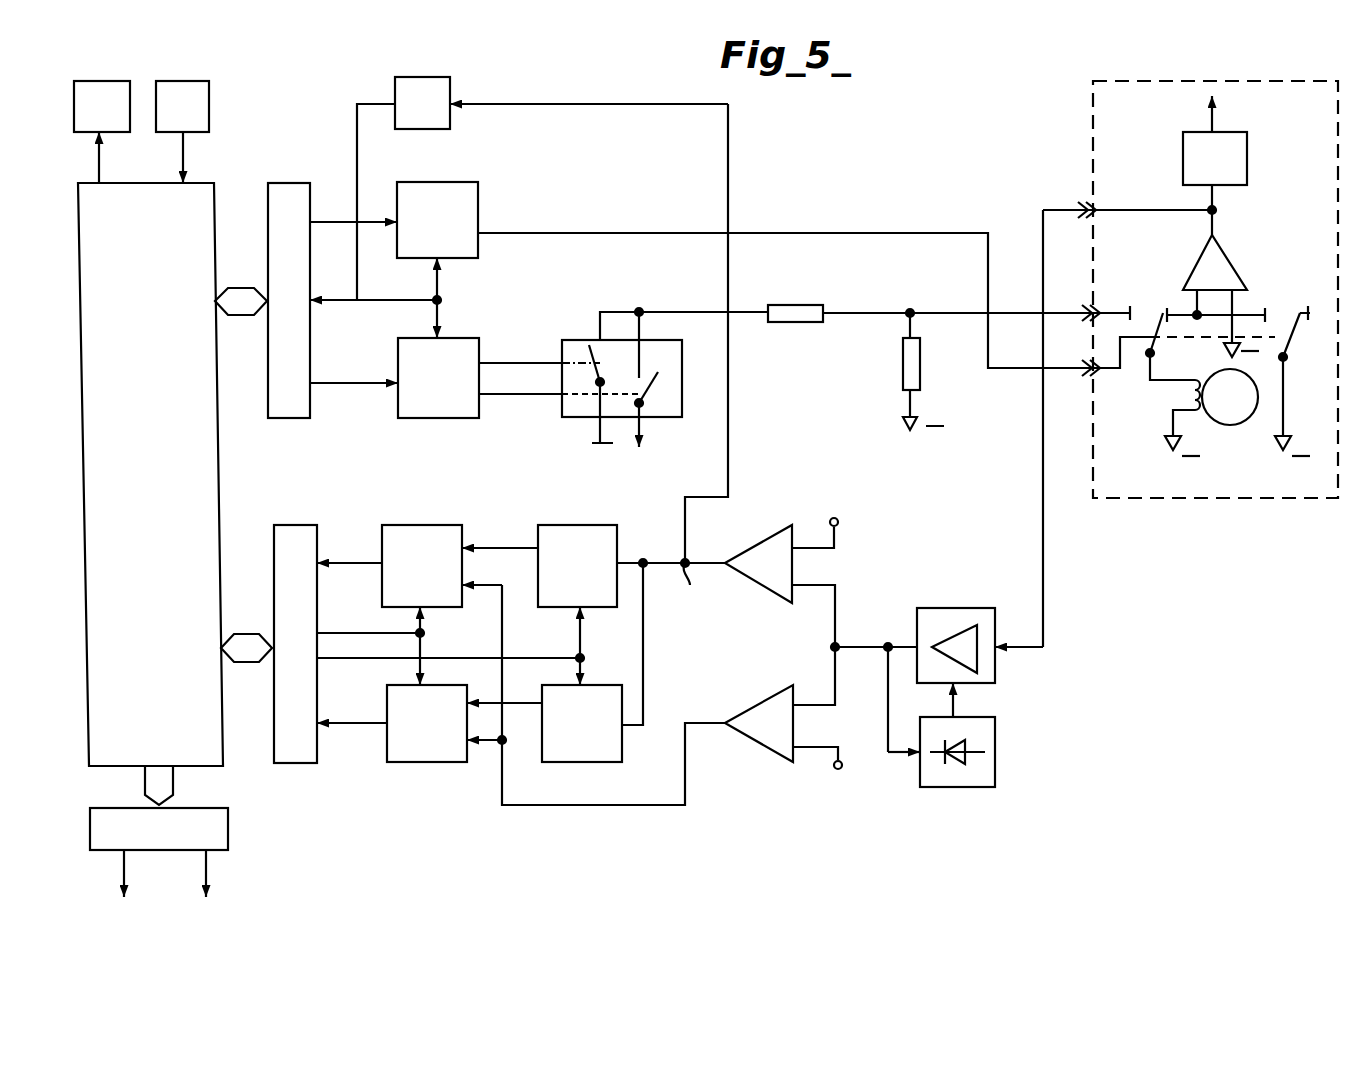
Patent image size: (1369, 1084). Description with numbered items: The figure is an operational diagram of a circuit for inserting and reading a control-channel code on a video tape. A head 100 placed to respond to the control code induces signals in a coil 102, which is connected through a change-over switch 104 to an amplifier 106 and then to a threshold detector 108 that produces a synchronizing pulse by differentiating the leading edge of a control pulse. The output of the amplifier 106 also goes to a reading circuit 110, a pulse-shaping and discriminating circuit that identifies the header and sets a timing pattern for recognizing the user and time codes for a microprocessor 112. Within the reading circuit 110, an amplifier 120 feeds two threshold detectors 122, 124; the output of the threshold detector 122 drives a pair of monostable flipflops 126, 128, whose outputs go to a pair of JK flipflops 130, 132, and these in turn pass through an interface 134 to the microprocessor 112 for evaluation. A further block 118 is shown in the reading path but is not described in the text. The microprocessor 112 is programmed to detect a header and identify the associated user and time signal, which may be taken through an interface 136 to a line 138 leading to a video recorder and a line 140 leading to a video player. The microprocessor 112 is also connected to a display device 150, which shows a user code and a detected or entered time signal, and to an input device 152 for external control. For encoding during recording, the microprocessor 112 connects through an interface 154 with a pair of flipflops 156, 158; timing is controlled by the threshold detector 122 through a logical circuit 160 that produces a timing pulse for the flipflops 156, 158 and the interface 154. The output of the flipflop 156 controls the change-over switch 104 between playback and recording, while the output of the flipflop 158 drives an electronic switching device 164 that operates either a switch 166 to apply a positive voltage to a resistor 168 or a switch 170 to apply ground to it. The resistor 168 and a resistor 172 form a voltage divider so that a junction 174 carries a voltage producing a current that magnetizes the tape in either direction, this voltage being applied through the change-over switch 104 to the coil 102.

The head 100 is at (1255, 420).
The coil 102 is at (1192, 395).
The change-over switch 104 is at (1292, 345).
The amplifier 106 is at (1225, 265).
The threshold detector 108 is at (1247, 150).
The reading circuit 110 is at (706, 661).
The microprocessor 112 is at (218, 490).
The rectifier 118 is at (995, 740).
The amplifier 120 is at (955, 608).
The threshold detector 122 is at (792, 563).
The threshold detector 124 is at (793, 723).
The monostable flipflop 126 is at (570, 525).
The monostable flipflop 128 is at (560, 762).
The JK flipflop 130 is at (420, 525).
The JK flipflop 132 is at (405, 762).
The interface 134 is at (300, 763).
The interface 136 is at (228, 828).
The line 138 is at (120, 868).
The line 140 is at (208, 870).
The display device 150 is at (105, 80).
The input device 152 is at (182, 80).
The interface 154 is at (282, 183).
The flipflop 156 is at (428, 182).
The flipflop 158 is at (435, 418).
The logical circuit 160 is at (422, 77).
The electronic switching device 164 is at (672, 340).
The switch 166 is at (665, 400).
The resistor 168 is at (790, 322).
The switch 170 is at (590, 383).
The resistor 172 is at (903, 380).
The junction 174 is at (910, 312).